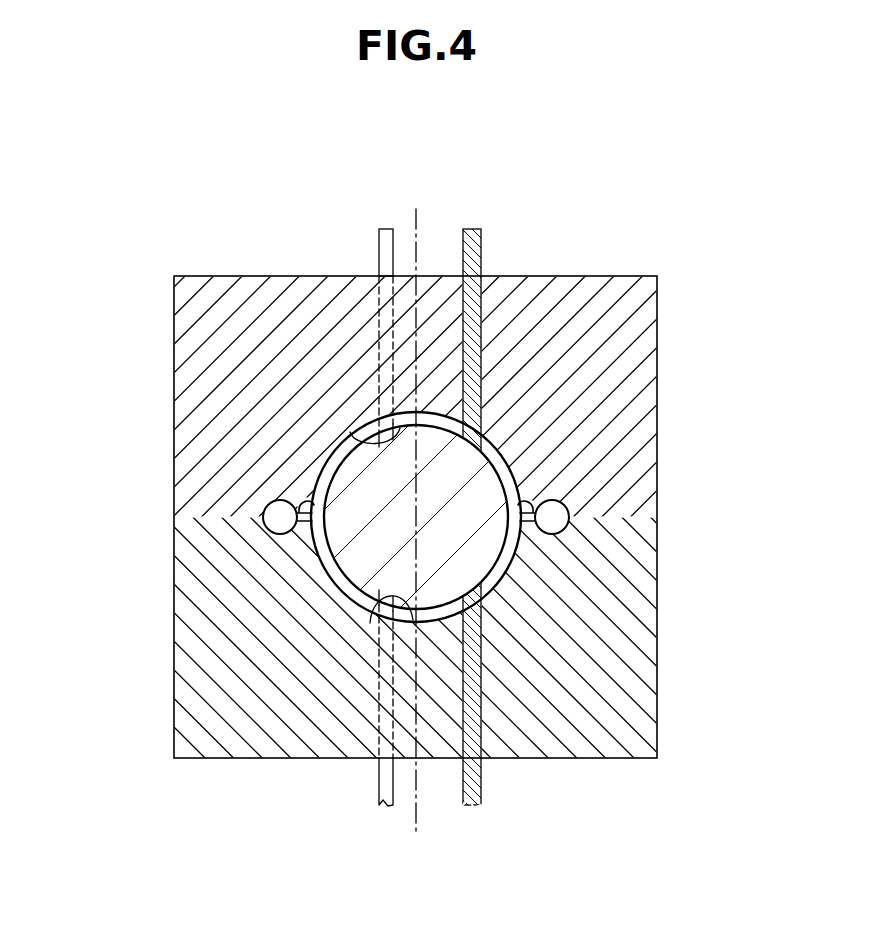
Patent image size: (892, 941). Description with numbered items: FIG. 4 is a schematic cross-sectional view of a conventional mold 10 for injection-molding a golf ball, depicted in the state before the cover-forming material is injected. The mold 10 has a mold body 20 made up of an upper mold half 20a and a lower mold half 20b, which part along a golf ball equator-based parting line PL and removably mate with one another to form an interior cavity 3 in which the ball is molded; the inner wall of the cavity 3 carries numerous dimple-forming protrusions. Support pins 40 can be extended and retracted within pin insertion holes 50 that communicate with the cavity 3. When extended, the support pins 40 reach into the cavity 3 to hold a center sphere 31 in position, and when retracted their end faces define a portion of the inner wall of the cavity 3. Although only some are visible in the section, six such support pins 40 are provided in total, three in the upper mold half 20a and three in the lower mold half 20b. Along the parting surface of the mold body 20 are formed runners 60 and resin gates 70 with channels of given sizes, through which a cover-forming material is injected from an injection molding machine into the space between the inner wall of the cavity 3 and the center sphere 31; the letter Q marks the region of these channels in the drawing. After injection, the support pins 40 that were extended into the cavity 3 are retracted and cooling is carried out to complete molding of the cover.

The conventional mold 10 is at (160, 206).
The mold body 20 is at (445, 488).
The upper mold half 20a is at (650, 370).
The lower mold half 20b is at (645, 612).
The cavity 3 is at (342, 586).
The center sphere 31 is at (372, 478).
The support pins 40 is at (527, 518).
The pin insertion holes 50 is at (492, 686).
The runners 60 is at (281, 522).
The resin gates 70 is at (313, 503).
The flow channel Q is at (372, 442).
The parting line PL is at (403, 485).